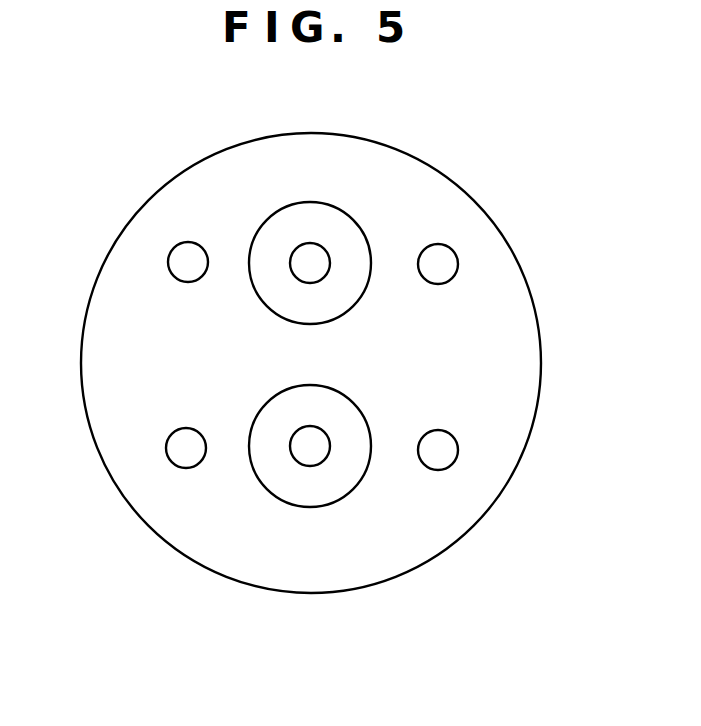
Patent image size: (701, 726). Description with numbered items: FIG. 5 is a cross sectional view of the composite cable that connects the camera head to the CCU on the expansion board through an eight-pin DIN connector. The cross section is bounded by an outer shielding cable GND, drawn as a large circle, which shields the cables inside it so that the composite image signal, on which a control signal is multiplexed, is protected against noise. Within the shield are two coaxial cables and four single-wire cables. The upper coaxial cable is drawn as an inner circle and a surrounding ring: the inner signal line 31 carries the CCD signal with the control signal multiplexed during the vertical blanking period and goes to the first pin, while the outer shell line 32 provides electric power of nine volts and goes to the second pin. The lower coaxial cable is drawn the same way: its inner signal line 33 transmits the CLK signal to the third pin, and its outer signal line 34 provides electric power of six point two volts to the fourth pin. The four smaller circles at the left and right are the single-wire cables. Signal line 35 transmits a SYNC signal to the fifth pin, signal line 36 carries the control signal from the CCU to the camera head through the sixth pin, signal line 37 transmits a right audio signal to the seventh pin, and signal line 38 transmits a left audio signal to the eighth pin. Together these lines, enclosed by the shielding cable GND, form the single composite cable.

The signal line 31 is at (310, 243).
The line 32 is at (322, 203).
The signal line 33 is at (320, 463).
The signal line 34 is at (297, 507).
The signal line 35 is at (450, 260).
The signal line 36 is at (450, 460).
The signal line 37 is at (170, 261).
The signal line 38 is at (178, 453).
The shielding cable GND is at (437, 543).